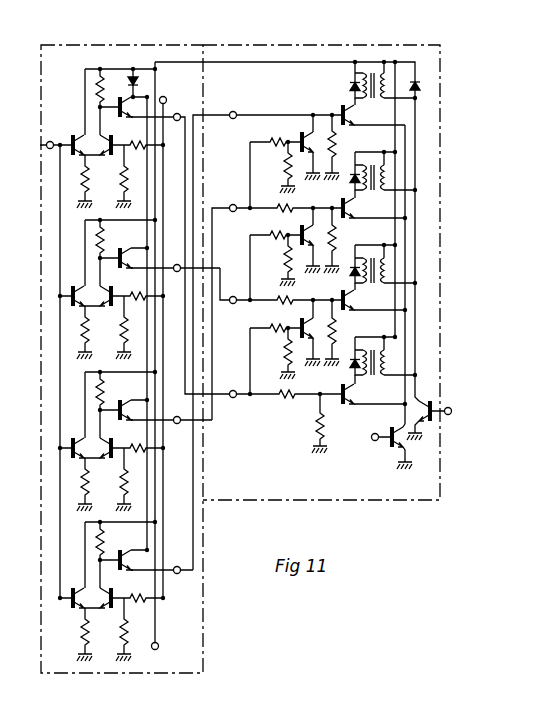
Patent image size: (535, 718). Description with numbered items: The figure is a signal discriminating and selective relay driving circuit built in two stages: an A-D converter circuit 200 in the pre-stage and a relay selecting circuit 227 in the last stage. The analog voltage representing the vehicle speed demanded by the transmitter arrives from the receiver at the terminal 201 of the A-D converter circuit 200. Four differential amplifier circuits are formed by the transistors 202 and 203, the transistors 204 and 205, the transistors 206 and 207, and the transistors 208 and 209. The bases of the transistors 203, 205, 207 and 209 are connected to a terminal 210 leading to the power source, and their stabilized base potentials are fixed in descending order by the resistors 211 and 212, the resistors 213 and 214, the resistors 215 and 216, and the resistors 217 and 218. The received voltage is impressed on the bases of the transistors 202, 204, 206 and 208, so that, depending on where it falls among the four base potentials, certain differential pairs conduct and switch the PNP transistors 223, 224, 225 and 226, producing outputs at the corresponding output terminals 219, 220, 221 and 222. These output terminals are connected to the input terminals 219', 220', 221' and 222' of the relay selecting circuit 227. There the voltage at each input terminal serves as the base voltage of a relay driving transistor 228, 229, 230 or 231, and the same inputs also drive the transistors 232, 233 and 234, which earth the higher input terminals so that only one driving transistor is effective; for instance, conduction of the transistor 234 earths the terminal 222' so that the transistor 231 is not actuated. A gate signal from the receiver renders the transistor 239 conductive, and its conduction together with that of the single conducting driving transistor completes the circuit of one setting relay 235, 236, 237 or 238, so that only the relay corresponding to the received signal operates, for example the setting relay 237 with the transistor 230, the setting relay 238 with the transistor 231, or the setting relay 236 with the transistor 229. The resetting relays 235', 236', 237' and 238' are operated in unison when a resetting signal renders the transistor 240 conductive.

The A-D converter circuit 200 is at (126, 46).
The terminal 201 is at (32, 367).
The transistor 202 is at (72, 137).
The transistor 203 is at (106, 144).
The transistor 204 is at (59, 295).
The transistor 205 is at (106, 294).
The transistor 206 is at (59, 448).
The transistor 207 is at (106, 448).
The transistor 208 is at (59, 599).
The transistor 209 is at (106, 595).
The terminal 210 is at (174, 337).
The resistor 211 is at (142, 135).
The resistor 212 is at (119, 176).
The resistor 213 is at (141, 287).
The resistor 214 is at (104, 327).
The resistor 215 is at (141, 439).
The resistor 216 is at (104, 479).
The resistor 217 is at (142, 588).
The resistor 218 is at (104, 629).
The output terminal 219 is at (180, 244).
The input terminal 219' is at (277, 421).
The output terminal 220 is at (190, 257).
The input terminal 220' is at (274, 297).
The output terminal 221 is at (171, 411).
The input terminal 221' is at (271, 302).
The output terminal 222 is at (167, 584).
The input terminal 222' is at (262, 328).
The PNP transistor 223 is at (121, 92).
The PNP transistor 224 is at (121, 243).
The PNP transistor 225 is at (121, 395).
The PNP transistor 226 is at (121, 545).
The relay selecting circuit 227 is at (440, 237).
The transistor 228 is at (358, 389).
The transistor 229 is at (358, 295).
The transistor 230 is at (357, 201).
The transistor 231 is at (356, 107).
The transistor 232 is at (293, 347).
The transistor 233 is at (293, 254).
The transistor 234 is at (293, 161).
The setting relay 235 is at (372, 370).
The resetting relay 235' is at (386, 347).
The setting relay 236 is at (372, 277).
The resetting relay 236' is at (386, 253).
The setting relay 237 is at (372, 185).
The resetting relay 237' is at (387, 161).
The setting relay 238 is at (369, 92).
The resetting relay 238' is at (390, 62).
The transistor 239 is at (387, 447).
The transistor 240 is at (441, 409).